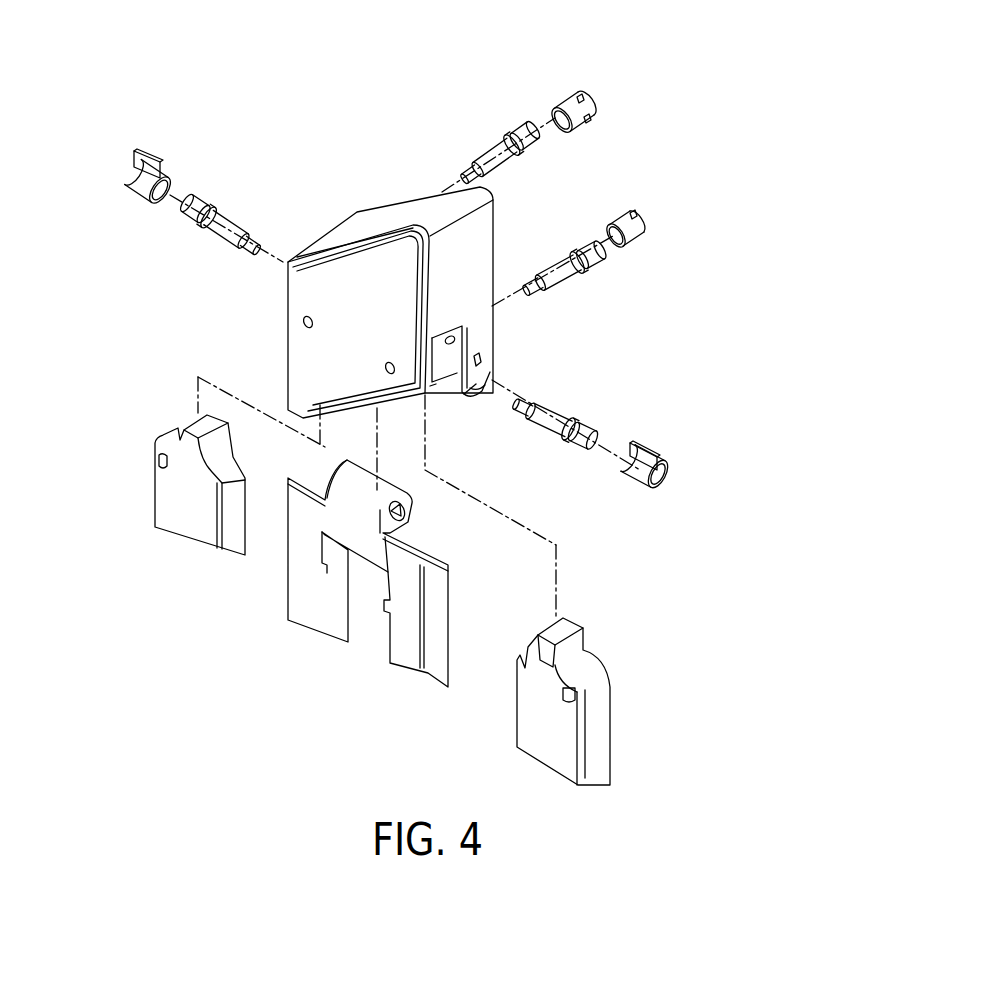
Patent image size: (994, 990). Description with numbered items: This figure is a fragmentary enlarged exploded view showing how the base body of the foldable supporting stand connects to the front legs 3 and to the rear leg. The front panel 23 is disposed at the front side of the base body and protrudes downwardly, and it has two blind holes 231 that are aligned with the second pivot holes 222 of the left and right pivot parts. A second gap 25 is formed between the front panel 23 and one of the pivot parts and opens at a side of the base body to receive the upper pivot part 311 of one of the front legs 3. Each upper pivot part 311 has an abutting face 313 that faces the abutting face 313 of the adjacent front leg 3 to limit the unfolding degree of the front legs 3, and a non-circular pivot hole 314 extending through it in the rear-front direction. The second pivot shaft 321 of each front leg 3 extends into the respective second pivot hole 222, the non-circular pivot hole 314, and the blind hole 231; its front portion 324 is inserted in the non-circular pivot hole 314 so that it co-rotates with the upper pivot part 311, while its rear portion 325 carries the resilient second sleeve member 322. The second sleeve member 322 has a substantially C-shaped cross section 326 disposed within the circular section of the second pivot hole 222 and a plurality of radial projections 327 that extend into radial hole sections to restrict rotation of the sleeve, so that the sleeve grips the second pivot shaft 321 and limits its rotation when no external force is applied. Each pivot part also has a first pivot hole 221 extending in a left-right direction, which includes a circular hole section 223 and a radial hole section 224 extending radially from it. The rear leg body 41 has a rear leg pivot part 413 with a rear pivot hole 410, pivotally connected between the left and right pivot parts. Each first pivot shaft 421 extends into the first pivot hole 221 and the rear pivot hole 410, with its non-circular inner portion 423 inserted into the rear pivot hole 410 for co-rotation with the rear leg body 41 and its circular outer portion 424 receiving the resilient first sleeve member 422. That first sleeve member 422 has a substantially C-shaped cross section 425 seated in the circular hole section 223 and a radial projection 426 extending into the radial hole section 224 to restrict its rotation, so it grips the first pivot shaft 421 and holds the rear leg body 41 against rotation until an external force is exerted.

The front leg 3 is at (367, 600).
The upper pivot part 311 is at (197, 462).
The abutting face 313 is at (217, 448).
The non-circular pivot hole 314 is at (160, 459).
The front panel 23 is at (322, 289).
The blind hole 231 is at (303, 323).
The second pivot hole 222 is at (452, 341).
The radial hole section 224 is at (481, 358).
The first pivot hole 221 is at (496, 378).
The circular hole section 223 is at (479, 386).
The second gap 25 is at (438, 386).
The second pivot shaft 321 is at (527, 198).
The second sleeve member 322 is at (603, 132).
The front portion 324 is at (492, 152).
The rear portion 325 is at (516, 152).
The C-shaped cross section 326 is at (582, 119).
The radial projection 327 is at (590, 116).
The rear leg body 41 is at (388, 550).
The rear pivot hole 410 is at (408, 512).
The rear leg pivot part 413 is at (348, 483).
The first pivot shaft 421 is at (423, 315).
The first sleeve member 422 is at (373, 362).
The inner portion 423 is at (535, 420).
The outer portion 424 is at (567, 443).
The C-shaped cross section 425 is at (632, 470).
The radial projection 426 is at (646, 452).